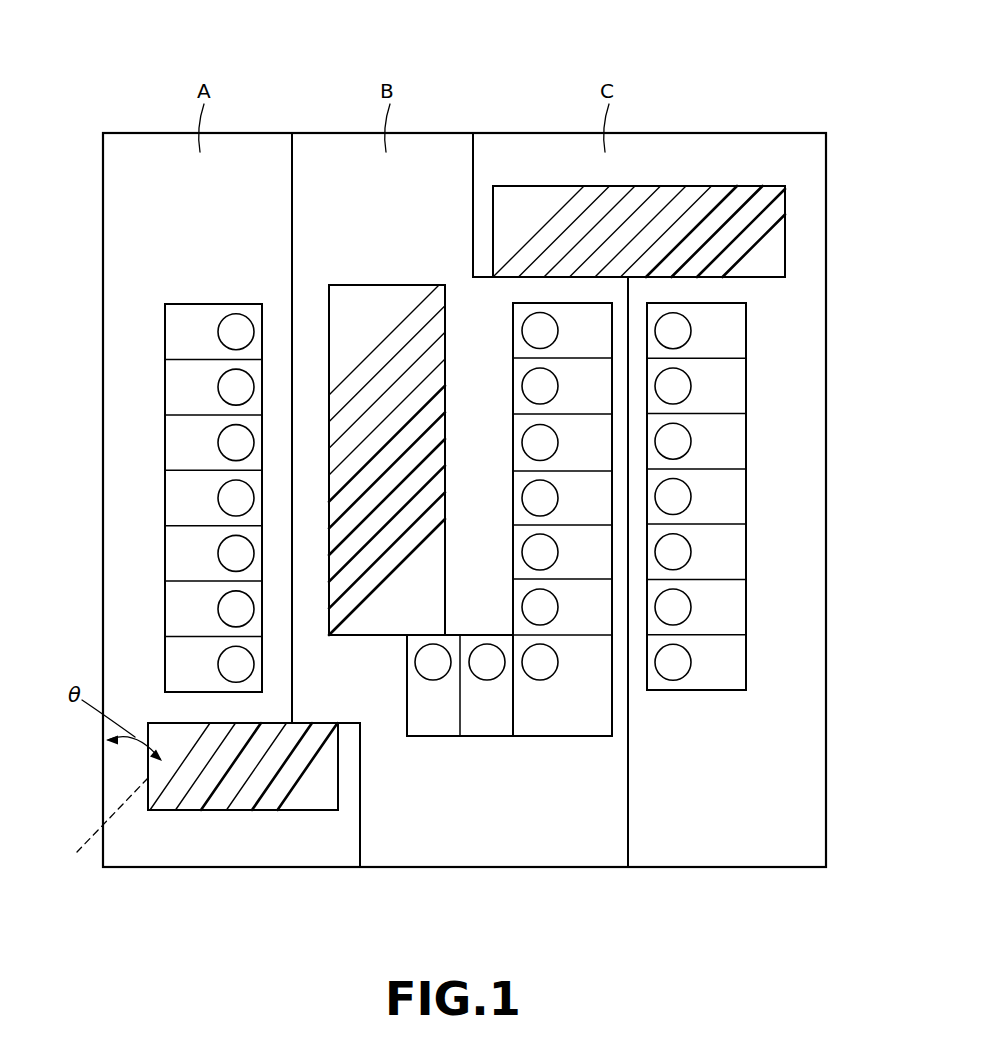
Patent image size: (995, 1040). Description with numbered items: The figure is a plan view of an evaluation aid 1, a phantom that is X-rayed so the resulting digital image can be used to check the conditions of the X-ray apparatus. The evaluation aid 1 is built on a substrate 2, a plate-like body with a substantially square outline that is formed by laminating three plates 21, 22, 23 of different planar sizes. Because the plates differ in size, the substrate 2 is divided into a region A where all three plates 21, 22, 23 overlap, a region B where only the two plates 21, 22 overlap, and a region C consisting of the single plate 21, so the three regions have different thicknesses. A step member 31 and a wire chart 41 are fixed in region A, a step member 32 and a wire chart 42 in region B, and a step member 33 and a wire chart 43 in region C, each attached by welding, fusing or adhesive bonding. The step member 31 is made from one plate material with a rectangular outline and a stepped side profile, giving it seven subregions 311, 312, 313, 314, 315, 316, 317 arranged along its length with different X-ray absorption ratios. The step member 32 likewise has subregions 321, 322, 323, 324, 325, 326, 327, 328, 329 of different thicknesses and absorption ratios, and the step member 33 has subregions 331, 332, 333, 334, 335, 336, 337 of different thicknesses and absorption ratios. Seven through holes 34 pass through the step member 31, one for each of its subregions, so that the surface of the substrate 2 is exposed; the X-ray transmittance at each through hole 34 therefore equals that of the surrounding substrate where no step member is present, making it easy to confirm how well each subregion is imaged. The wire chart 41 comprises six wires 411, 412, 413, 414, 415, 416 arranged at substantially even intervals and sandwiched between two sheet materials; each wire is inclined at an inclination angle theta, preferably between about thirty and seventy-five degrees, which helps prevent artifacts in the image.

The evaluation aid 1 is at (742, 66).
The substrate 2 is at (786, 128).
The plate 21 is at (727, 855).
The plate 22 is at (522, 855).
The plate 23 is at (307, 853).
The step member 31 is at (192, 459).
The step member 32 is at (509, 567).
The step member 33 is at (697, 535).
The through hole 34 is at (241, 386).
The wire chart 41 is at (199, 799).
The wire chart 42 is at (406, 266).
The wire chart 43 is at (727, 180).
The subregion 311 is at (212, 346).
The subregion 312 is at (212, 401).
The subregion 313 is at (212, 457).
The subregion 314 is at (212, 512).
The subregion 315 is at (212, 568).
The subregion 316 is at (212, 623).
The subregion 317 is at (212, 678).
The subregion 321 is at (602, 345).
The subregion 322 is at (602, 401).
The subregion 323 is at (602, 457).
The subregion 324 is at (602, 512).
The subregion 325 is at (602, 566).
The subregion 326 is at (602, 621).
The subregion 327 is at (602, 676).
The subregion 328 is at (505, 718).
The subregion 329 is at (451, 718).
The subregion 331 is at (737, 345).
The subregion 332 is at (737, 400).
The subregion 333 is at (737, 455).
The subregion 334 is at (737, 511).
The subregion 335 is at (737, 566).
The subregion 336 is at (737, 621).
The subregion 337 is at (737, 676).
The wire 411 is at (148, 769).
The wire 412 is at (163, 806).
The wire 413 is at (190, 807).
The wire 414 is at (220, 807).
The wire 415 is at (298, 733).
The wire 416 is at (290, 777).